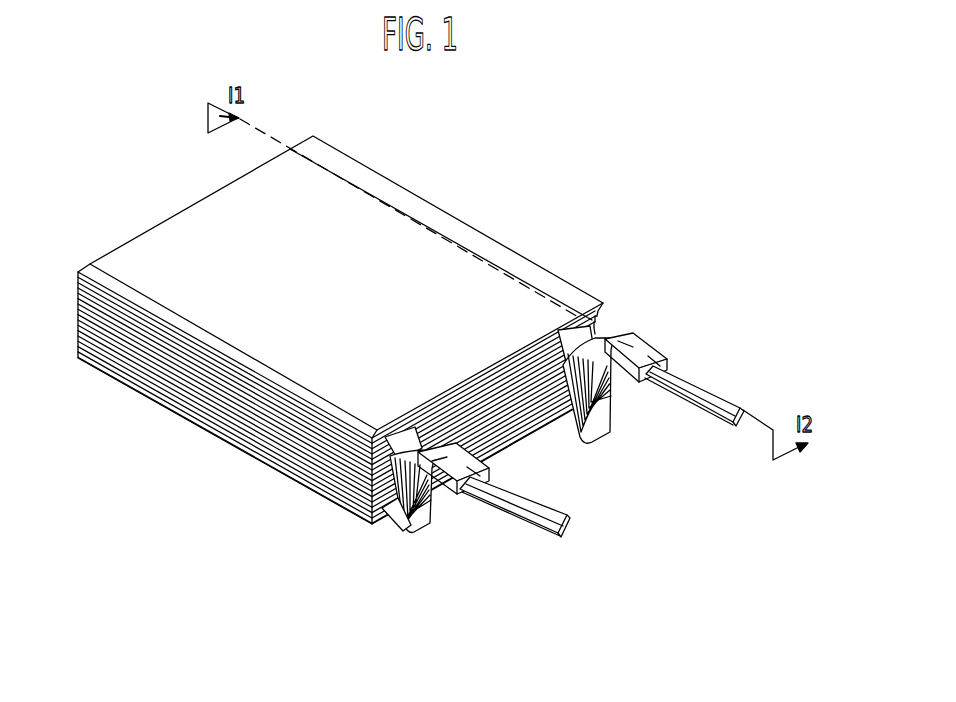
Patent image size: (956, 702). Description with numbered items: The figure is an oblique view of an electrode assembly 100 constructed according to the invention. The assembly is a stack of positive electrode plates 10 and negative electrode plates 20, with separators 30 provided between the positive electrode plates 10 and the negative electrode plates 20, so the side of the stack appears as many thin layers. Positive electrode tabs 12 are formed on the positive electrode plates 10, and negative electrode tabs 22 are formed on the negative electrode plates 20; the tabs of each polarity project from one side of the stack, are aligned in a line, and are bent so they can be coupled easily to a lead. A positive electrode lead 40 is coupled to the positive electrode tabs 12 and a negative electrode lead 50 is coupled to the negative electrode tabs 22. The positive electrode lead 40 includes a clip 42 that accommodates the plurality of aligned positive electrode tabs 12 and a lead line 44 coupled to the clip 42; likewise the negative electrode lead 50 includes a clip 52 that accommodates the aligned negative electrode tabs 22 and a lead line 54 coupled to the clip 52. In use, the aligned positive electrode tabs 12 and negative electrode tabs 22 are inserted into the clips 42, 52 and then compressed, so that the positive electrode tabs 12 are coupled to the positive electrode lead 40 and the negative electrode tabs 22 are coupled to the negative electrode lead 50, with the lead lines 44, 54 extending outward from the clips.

The electrode assembly 100 is at (342, 345).
The positive electrode plates 10 is at (160, 300).
The positive electrode tabs 12 is at (607, 340).
The negative electrode plates 20 is at (347, 448).
The negative electrode tabs 22 is at (392, 527).
The separators 30 is at (223, 355).
The positive electrode lead 40 is at (684, 340).
The clip 42 is at (648, 342).
The lead line 44 is at (707, 397).
The negative electrode lead 50 is at (493, 563).
The clip 52 is at (438, 487).
The lead line 54 is at (514, 497).